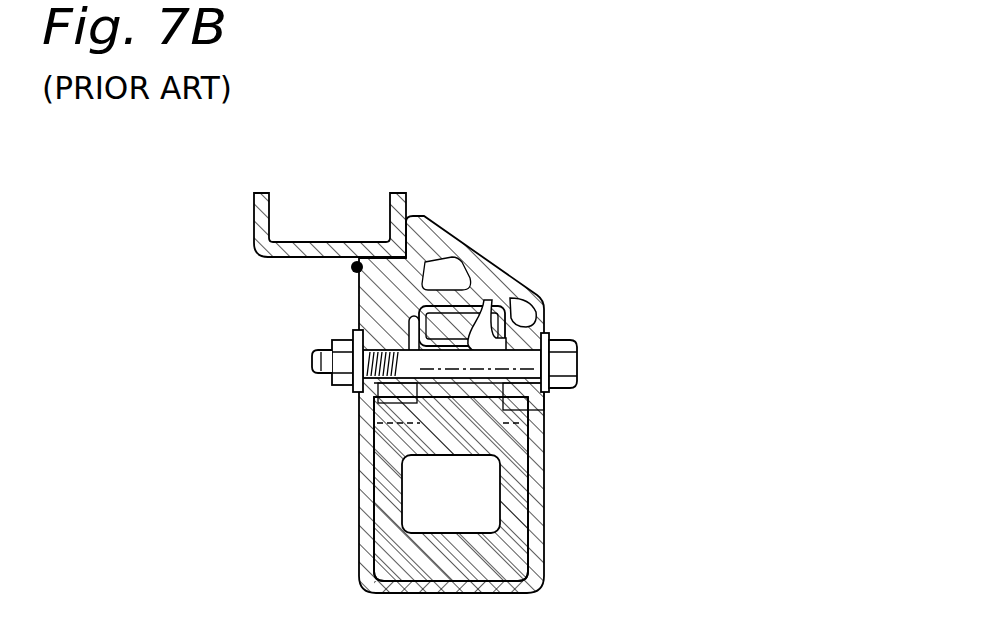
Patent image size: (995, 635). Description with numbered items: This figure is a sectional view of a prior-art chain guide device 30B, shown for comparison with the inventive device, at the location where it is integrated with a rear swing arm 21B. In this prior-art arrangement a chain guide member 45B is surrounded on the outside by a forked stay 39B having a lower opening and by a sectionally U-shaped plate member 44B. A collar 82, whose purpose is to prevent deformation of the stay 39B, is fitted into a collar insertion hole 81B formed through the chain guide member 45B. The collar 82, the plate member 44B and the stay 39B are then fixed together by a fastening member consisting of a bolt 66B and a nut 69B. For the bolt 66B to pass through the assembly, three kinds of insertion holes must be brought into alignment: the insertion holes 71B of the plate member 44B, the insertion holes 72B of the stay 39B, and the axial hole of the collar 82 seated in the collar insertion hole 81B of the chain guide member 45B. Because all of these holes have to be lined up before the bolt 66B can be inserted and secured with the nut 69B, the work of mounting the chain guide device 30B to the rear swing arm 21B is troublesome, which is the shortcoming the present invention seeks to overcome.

The rear swing arm 21B is at (253, 205).
The chain guide device 30B is at (725, 330).
The forked stay 39B is at (525, 279).
The plate member 44B is at (535, 467).
The chain guide member 45B is at (530, 434).
The bolt 66B is at (572, 363).
The nut 69B is at (340, 392).
The insertion holes of the plate member 71B is at (362, 330).
The insertion holes of the stay 72B is at (411, 316).
The collar insertion hole 81B is at (506, 305).
The collar 82 is at (517, 308).